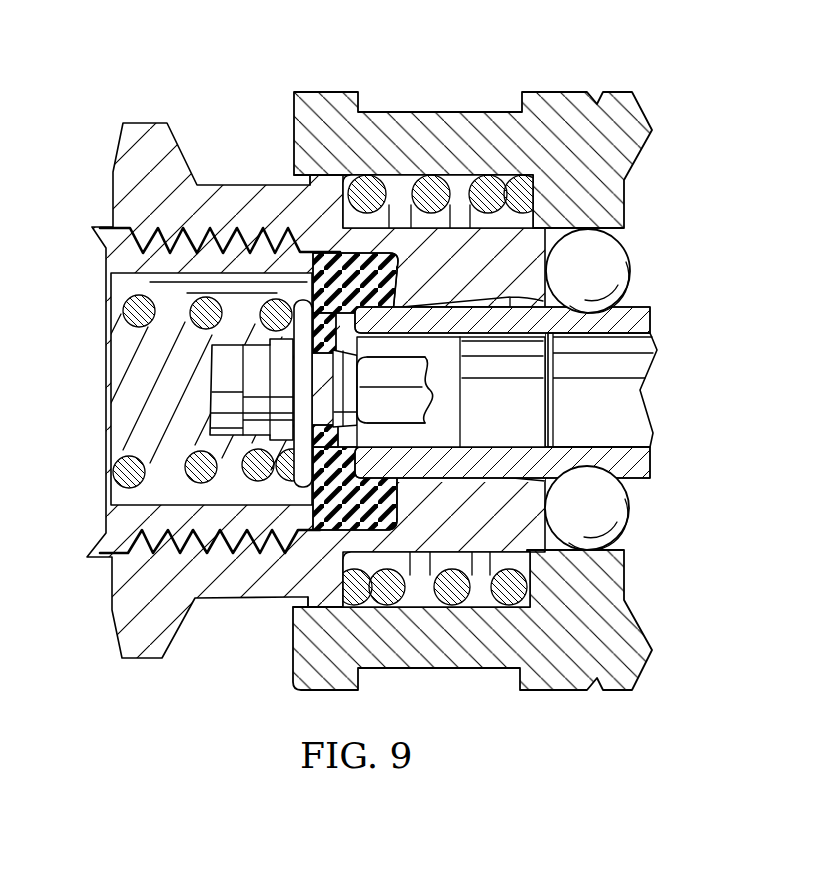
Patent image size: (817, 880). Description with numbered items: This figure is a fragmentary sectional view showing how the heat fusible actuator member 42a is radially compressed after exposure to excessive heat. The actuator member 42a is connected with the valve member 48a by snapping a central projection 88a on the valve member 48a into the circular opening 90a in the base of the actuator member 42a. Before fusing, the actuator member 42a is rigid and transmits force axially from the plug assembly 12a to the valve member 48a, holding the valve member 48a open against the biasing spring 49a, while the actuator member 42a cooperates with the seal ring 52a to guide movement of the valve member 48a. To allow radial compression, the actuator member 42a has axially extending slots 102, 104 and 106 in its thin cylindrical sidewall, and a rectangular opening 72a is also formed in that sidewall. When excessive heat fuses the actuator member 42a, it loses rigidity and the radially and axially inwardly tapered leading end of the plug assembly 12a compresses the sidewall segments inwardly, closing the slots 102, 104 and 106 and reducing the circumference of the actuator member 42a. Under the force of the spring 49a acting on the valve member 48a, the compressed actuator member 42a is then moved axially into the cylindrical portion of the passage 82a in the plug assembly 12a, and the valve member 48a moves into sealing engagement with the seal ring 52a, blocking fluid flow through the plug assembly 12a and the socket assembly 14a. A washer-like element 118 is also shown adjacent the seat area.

The socket assembly 14a is at (141, 106).
The actuator member 42a is at (334, 312).
The seal ring 52a is at (338, 535).
The valve member 48a is at (285, 308).
The biasing spring 49a is at (115, 468).
The central projection 88a is at (322, 374).
The circular opening 90a is at (316, 426).
The washer 118 is at (410, 310).
The plug assembly 12a is at (633, 315).
The axially extending slot 106 is at (432, 339).
The axially extending slot 104 is at (447, 388).
The rectangular opening 72a is at (415, 398).
The axially extending slot 102 is at (443, 437).
The passage 82a is at (610, 408).